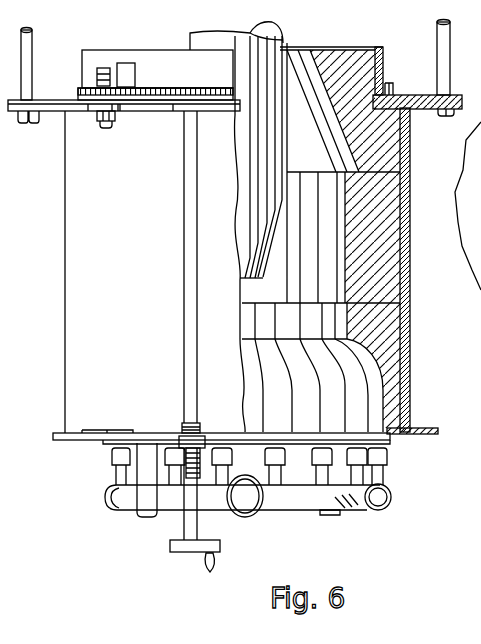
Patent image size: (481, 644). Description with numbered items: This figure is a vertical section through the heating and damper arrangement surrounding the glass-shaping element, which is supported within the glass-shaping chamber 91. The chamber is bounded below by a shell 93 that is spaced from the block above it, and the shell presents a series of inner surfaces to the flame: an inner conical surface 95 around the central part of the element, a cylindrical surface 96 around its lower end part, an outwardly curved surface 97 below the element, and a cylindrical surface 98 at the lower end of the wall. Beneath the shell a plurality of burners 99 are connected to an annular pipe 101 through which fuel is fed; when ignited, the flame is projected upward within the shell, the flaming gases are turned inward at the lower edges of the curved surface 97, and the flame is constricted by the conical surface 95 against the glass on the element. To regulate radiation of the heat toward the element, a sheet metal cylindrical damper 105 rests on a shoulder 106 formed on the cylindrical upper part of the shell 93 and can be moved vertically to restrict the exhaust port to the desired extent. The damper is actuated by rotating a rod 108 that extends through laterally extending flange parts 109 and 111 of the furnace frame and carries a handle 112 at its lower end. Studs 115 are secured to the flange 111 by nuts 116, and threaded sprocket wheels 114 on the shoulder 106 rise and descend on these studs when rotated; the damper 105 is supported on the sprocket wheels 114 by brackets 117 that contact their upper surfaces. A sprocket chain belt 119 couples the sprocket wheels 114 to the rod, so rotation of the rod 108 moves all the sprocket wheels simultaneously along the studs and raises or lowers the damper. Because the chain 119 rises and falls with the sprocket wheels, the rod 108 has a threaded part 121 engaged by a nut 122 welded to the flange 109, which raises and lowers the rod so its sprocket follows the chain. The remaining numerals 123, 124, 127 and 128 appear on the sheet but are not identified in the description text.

The glass-shaping chamber 91 is at (317, 208).
The shell 93 is at (395, 233).
The inner conical surface 95 is at (310, 152).
The cylindrical surface 96 is at (323, 273).
The outwardly curved surface 97 is at (377, 365).
The cylindrical surface 98 is at (348, 408).
The burners 99 is at (117, 458).
The annular pipe 101 is at (353, 520).
The sheet metal cylindrical damper 105 is at (158, 60).
The shoulder 106 is at (393, 95).
The rod 108 is at (184, 282).
The flange part 109 is at (65, 442).
The flange part 111 is at (55, 113).
The handle 112 is at (195, 570).
The sprocket wheels 114 is at (115, 105).
The studs 115 is at (97, 72).
The nuts 116 is at (105, 130).
The brackets 117 is at (135, 74).
The sprocket chain belt 119 is at (82, 87).
The threaded part 121 is at (203, 443).
The nut 122 is at (185, 442).
The element 123 is at (467, 460).
The element 124 is at (466, 323).
The element 127 is at (480, 484).
The element 128 is at (468, 530).